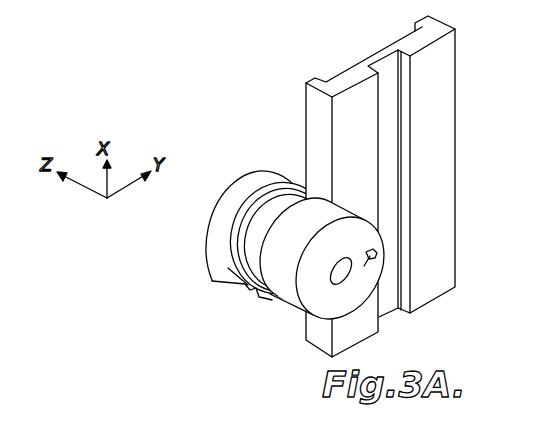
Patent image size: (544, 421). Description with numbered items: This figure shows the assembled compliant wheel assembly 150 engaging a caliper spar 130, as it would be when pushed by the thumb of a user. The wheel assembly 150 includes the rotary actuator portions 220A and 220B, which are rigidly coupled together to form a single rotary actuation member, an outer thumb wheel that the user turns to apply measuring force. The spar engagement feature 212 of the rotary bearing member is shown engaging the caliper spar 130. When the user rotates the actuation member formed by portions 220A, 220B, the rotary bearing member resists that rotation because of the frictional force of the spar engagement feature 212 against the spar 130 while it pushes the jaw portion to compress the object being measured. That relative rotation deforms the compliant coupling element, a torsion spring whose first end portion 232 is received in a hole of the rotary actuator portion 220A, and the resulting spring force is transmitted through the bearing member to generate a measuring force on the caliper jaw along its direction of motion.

The caliper spar 130 is at (350, 76).
The wheel assembly 150 is at (214, 140).
The spar engagement feature 212 is at (255, 300).
The rotary actuator portion 220A is at (286, 300).
The rotary actuator portion 220B is at (228, 268).
The first end portion 232 is at (368, 262).